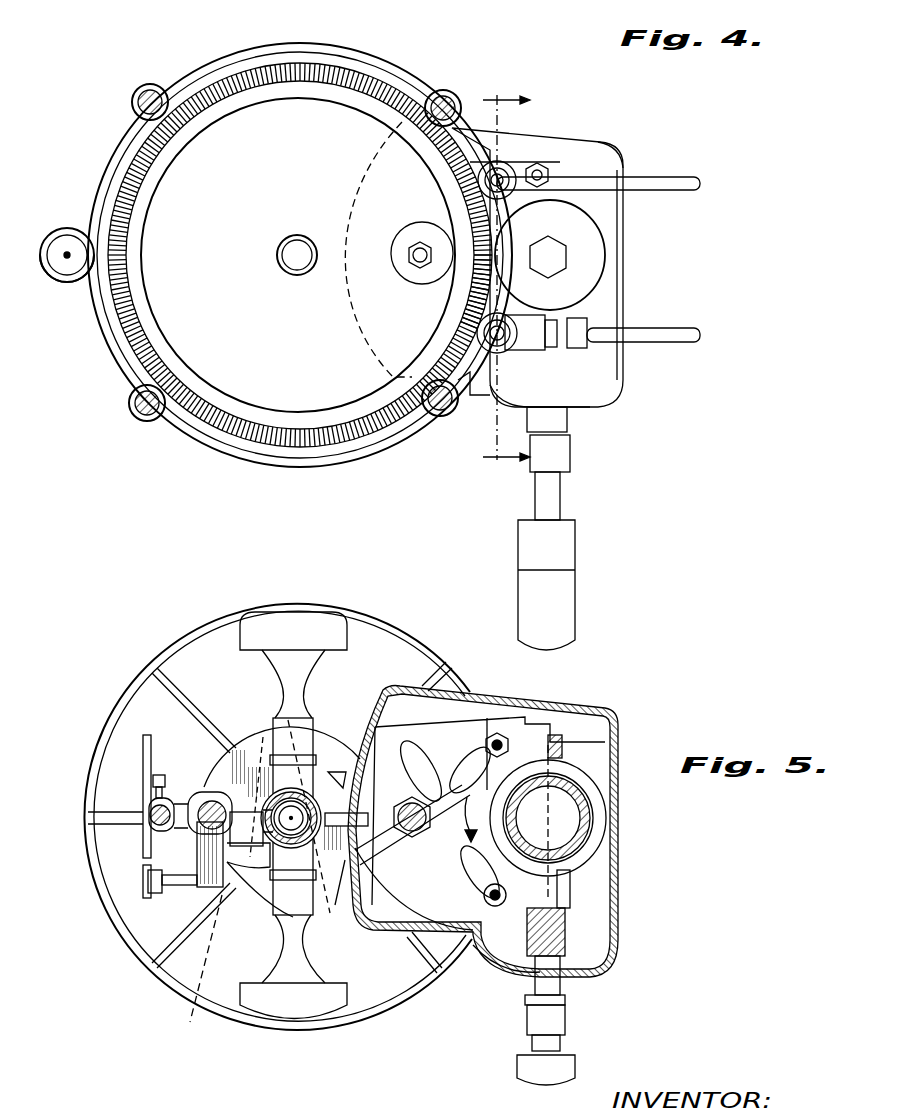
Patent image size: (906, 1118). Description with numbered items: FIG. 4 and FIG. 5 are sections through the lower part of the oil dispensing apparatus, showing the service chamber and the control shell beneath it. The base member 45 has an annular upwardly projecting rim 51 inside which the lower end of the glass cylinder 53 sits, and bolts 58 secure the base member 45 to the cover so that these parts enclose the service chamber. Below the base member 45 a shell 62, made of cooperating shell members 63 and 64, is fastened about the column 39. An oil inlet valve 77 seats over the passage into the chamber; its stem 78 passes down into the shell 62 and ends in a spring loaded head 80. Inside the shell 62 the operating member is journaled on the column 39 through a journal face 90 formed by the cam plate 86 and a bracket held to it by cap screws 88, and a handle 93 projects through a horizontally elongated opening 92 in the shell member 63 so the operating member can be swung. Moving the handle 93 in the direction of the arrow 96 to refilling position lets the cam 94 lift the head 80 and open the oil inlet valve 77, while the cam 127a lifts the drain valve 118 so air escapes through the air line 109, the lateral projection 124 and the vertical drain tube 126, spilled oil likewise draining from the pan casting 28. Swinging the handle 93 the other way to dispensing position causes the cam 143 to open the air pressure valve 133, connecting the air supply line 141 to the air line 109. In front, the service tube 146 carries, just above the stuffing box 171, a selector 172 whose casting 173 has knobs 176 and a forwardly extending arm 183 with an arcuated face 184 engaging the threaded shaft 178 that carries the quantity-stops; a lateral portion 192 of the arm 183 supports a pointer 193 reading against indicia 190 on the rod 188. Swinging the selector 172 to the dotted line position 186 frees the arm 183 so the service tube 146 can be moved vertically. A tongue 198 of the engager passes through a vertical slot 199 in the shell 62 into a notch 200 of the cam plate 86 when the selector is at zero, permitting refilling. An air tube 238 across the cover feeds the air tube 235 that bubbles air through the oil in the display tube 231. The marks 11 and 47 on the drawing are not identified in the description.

In FIG. 4, the section line 11 is at (505, 278).
In FIG. 4, the pan casting 28 is at (290, 470).
In FIG. 5, the pan casting 28 is at (242, 616).
In FIG. 5, the column 39 is at (590, 830).
In FIG. 4, the base member 45 is at (585, 278).
In FIG. 4, the nut 47 is at (548, 250).
In FIG. 4, the rim 51 is at (205, 428).
In FIG. 4, the glass cylinder 53 is at (352, 78).
In FIG. 4, the bolts 58 is at (441, 90).
In FIG. 4, the shell 62 is at (572, 155).
In FIG. 5, the shell 62 is at (592, 702).
In FIG. 4, the shell member 63 is at (600, 388).
In FIG. 4, the shell member 64 is at (616, 168).
In FIG. 4, the oil inlet valve 77 is at (412, 250).
In FIG. 5, the stem 78 is at (412, 796).
In FIG. 5, the head 80 is at (385, 760).
In FIG. 5, the cam plate 86 is at (442, 690).
In FIG. 5, the cap screws 88 is at (565, 742).
In FIG. 5, the journal face 90 is at (590, 803).
In FIG. 5, the horizontally elongated opening 92 is at (580, 947).
In FIG. 4, the handle 93 is at (565, 602).
In FIG. 5, the handle 93 is at (570, 1072).
In FIG. 5, the cam 94 is at (436, 745).
In FIG. 5, the arrow 96 is at (466, 855).
In FIG. 4, the air line 109 is at (493, 348).
In FIG. 5, the drain valve 118 is at (504, 918).
In FIG. 4, the lateral projection 124 is at (525, 350).
In FIG. 4, the vertical drain tube 126 is at (658, 342).
In FIG. 5, the cam 127a is at (448, 958).
In FIG. 5, the air pressure valve 133 is at (544, 822).
In FIG. 4, the air supply line 141 is at (665, 191).
In FIG. 5, the cam 143 is at (497, 733).
In FIG. 4, the service tube 146 is at (283, 255).
In FIG. 5, the stuffing box 171 is at (270, 745).
In FIG. 5, the selector 172 is at (276, 726).
In FIG. 5, the casting 173 is at (245, 798).
In FIG. 5, the knobs 176 is at (305, 622).
In FIG. 4, the shaft 178 is at (418, 265).
In FIG. 5, the shaft 178 is at (207, 805).
In FIG. 5, the forwardly extending arm 183 is at (225, 877).
In FIG. 5, the arcuated face 184 is at (203, 822).
In FIG. 5, the dotted lines 186 is at (197, 975).
In FIG. 5, the rod 188 is at (158, 822).
In FIG. 5, the indicia 190 is at (143, 770).
In FIG. 5, the lateral portion 192 is at (205, 880).
In FIG. 5, the pointer 193 is at (150, 882).
In FIG. 5, the tongue 198 is at (337, 897).
In FIG. 5, the vertical slot 199 is at (345, 800).
In FIG. 5, the notch 200 is at (412, 825).
In FIG. 4, the display tube 231 is at (62, 290).
In FIG. 4, the air tube 235 is at (67, 250).
In FIG. 4, the air tube 238 is at (538, 170).